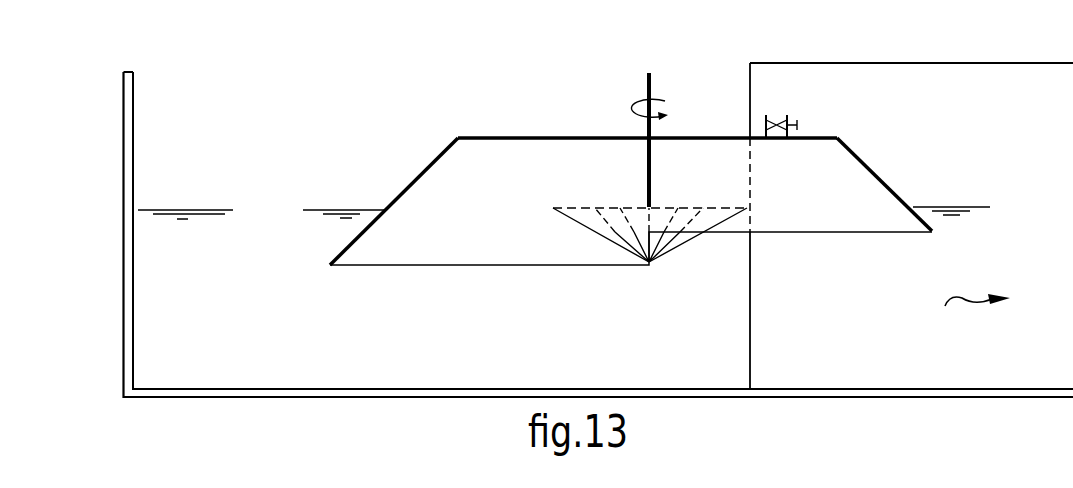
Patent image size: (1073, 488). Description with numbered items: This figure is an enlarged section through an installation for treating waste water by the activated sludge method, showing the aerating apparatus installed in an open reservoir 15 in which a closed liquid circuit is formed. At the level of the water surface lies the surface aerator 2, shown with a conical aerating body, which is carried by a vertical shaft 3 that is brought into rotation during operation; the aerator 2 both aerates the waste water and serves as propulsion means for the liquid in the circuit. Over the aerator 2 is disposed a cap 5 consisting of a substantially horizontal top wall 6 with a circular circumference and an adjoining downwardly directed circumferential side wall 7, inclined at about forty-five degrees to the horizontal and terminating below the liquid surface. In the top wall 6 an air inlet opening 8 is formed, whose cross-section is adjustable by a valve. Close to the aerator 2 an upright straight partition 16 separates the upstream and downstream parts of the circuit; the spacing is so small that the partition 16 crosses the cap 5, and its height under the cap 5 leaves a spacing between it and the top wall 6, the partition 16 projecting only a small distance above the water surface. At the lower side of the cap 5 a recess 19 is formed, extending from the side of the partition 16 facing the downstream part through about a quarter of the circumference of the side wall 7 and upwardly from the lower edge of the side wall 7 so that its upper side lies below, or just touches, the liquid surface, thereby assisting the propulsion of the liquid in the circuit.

The surface aerator 2 is at (678, 244).
The vertical shaft 3 is at (647, 84).
The cap 5 is at (631, 169).
The top wall 6 is at (507, 136).
The side wall 7 is at (868, 164).
The air inlet opening 8 is at (765, 122).
The open reservoir 15 is at (128, 128).
The partition 16 is at (918, 78).
The recess 19 is at (708, 246).